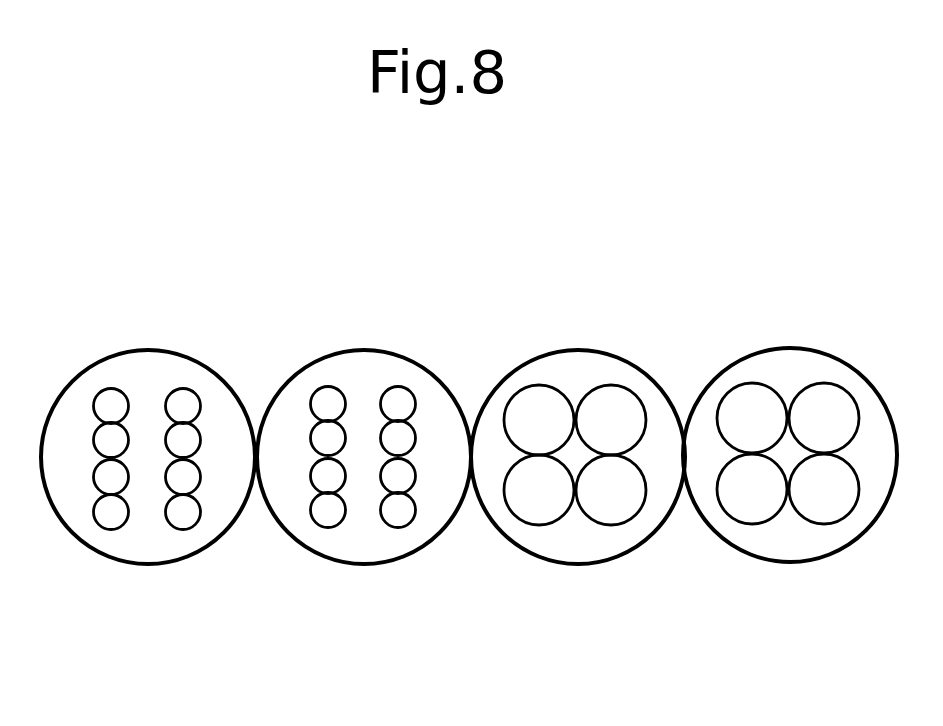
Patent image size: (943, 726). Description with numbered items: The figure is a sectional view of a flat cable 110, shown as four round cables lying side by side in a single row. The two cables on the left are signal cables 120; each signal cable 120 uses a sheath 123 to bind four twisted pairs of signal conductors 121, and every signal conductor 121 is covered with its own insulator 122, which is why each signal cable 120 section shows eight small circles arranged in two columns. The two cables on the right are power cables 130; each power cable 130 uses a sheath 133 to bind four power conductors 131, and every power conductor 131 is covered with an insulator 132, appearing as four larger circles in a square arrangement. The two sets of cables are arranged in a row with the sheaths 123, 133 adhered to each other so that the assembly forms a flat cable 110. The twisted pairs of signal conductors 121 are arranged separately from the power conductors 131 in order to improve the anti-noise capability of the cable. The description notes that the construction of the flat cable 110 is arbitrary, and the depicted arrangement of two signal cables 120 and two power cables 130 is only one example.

The flat cable 110 is at (418, 318).
The signal cable 120 is at (213, 368).
The signal conductor 121 is at (191, 510).
The insulator 122 is at (100, 520).
The sheath 123 is at (88, 365).
The power cable 130 is at (648, 368).
The power conductor 131 is at (618, 512).
The insulator 132 is at (530, 523).
The sheath 133 is at (558, 350).